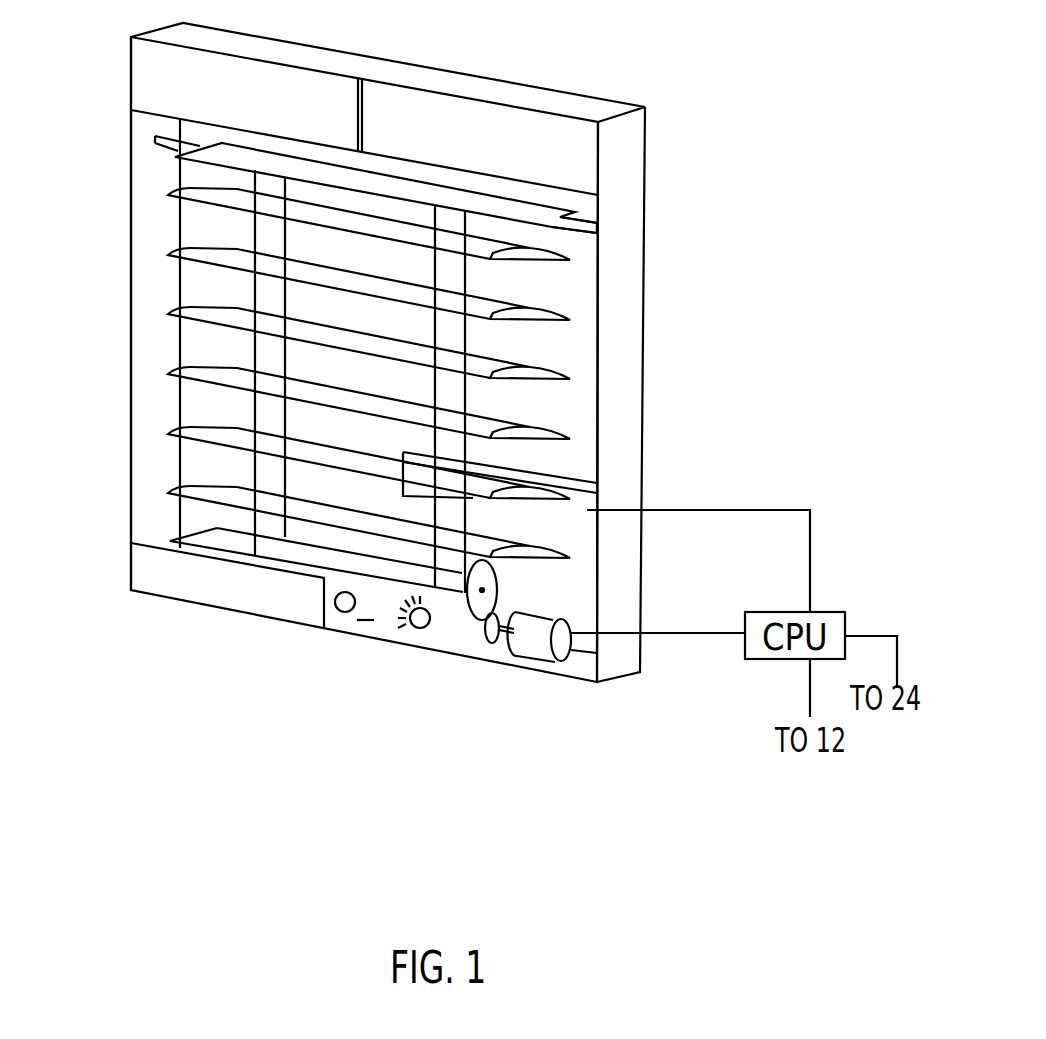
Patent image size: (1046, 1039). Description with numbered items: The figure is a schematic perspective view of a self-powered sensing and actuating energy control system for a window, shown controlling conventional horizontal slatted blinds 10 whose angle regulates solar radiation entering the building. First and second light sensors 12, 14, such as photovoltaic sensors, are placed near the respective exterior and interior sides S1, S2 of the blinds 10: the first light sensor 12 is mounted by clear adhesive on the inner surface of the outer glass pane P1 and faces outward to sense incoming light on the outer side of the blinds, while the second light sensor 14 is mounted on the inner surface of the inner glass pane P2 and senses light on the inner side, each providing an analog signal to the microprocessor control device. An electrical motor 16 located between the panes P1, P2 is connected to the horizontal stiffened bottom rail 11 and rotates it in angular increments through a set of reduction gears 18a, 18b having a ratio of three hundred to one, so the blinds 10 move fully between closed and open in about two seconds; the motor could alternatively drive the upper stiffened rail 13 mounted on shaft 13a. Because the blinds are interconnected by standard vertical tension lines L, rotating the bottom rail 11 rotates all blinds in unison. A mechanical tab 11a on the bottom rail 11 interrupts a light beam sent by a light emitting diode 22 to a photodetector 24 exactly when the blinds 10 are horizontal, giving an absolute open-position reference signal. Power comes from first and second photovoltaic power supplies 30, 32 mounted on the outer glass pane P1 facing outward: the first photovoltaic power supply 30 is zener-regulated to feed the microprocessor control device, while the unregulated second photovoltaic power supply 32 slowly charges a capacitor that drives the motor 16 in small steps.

The horizontal slatted blinds 10 is at (563, 360).
The bottom rail 11 is at (187, 535).
The mechanical tab 11a is at (377, 588).
The first light sensor 12 is at (216, 605).
The upper stiffened rail 13 is at (556, 210).
The shaft 13a is at (577, 228).
The second light sensor 14 is at (580, 533).
The electrical motor 16 is at (561, 667).
The reduction gear 18a is at (498, 648).
The reduction gear 18b is at (500, 586).
The light emitting diode 22 is at (427, 636).
The photodetector 24 is at (342, 613).
The first photovoltaic power supply 30 is at (246, 51).
The second photovoltaic power supply 32 is at (462, 89).
The outer glass pane P1 is at (583, 452).
The inner glass pane P2 is at (645, 337).
The exterior side S1 is at (146, 447).
The interior side S2 is at (652, 396).
The vertical tension lines L is at (275, 354).